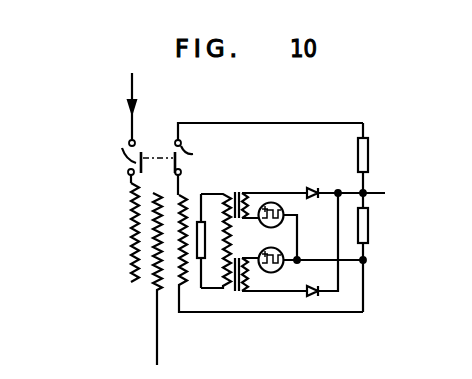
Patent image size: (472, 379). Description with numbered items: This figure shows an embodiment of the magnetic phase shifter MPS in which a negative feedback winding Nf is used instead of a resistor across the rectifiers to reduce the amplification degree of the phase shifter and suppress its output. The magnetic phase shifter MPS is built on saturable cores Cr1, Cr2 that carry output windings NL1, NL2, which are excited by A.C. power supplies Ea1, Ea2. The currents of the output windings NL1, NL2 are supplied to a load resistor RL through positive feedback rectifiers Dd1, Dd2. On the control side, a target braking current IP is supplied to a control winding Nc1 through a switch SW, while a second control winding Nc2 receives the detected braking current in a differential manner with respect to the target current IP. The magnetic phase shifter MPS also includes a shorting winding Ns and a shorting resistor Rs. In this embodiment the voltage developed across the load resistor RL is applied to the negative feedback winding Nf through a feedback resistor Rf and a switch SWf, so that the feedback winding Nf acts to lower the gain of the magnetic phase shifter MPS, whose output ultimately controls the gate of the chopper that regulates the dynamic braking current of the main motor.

The target braking current IP is at (139, 105).
The switch SW is at (110, 154).
The switch SWf is at (269, 159).
The control winding Nc1 is at (130, 246).
The control winding Nc2 is at (156, 271).
The negative feedback winding Nf is at (179, 274).
The shorting winding Ns is at (214, 227).
The shorting resistor Rs is at (197, 262).
The saturable core Cr1 is at (236, 190).
The saturable core Cr2 is at (237, 292).
The output winding NL1 is at (248, 201).
The output winding NL2 is at (250, 285).
The positive feedback rectifier Dd1 is at (312, 186).
The positive feedback rectifier Dd2 is at (318, 298).
The A.C. power supply Ea1 is at (295, 232).
The A.C. power supply Ea2 is at (312, 251).
The feedback resistor Rf is at (368, 150).
The load resistor RL is at (368, 232).
The magnetic phase shifter MPS is at (287, 369).